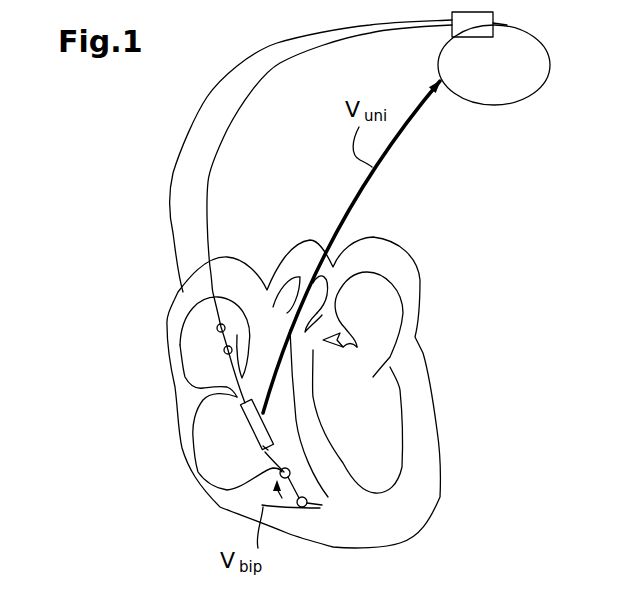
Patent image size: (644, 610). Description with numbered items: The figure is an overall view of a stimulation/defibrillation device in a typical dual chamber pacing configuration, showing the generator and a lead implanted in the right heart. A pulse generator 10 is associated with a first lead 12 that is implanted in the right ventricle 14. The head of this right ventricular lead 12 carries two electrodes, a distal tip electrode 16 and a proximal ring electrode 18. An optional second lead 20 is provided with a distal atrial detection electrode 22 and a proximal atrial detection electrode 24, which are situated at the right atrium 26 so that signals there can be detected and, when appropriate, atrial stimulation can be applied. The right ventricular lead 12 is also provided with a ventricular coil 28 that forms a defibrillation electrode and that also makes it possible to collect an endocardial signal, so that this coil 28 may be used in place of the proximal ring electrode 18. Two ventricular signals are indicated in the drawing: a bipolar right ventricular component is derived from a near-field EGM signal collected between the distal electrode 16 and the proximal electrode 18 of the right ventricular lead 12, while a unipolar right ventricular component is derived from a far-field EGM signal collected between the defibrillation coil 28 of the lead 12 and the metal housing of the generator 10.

The pulse generator 10 is at (539, 63).
The first lead 12 is at (190, 132).
The right ventricle 14 is at (240, 445).
The distal electrode 16 is at (315, 508).
The proximal electrode 18 is at (260, 502).
The second lead 20 is at (207, 182).
The distal atrial electrode 22 is at (224, 352).
The proximal atrial electrode 24 is at (217, 330).
The right atrium 26 is at (217, 381).
The ventricular coil 28 is at (258, 447).